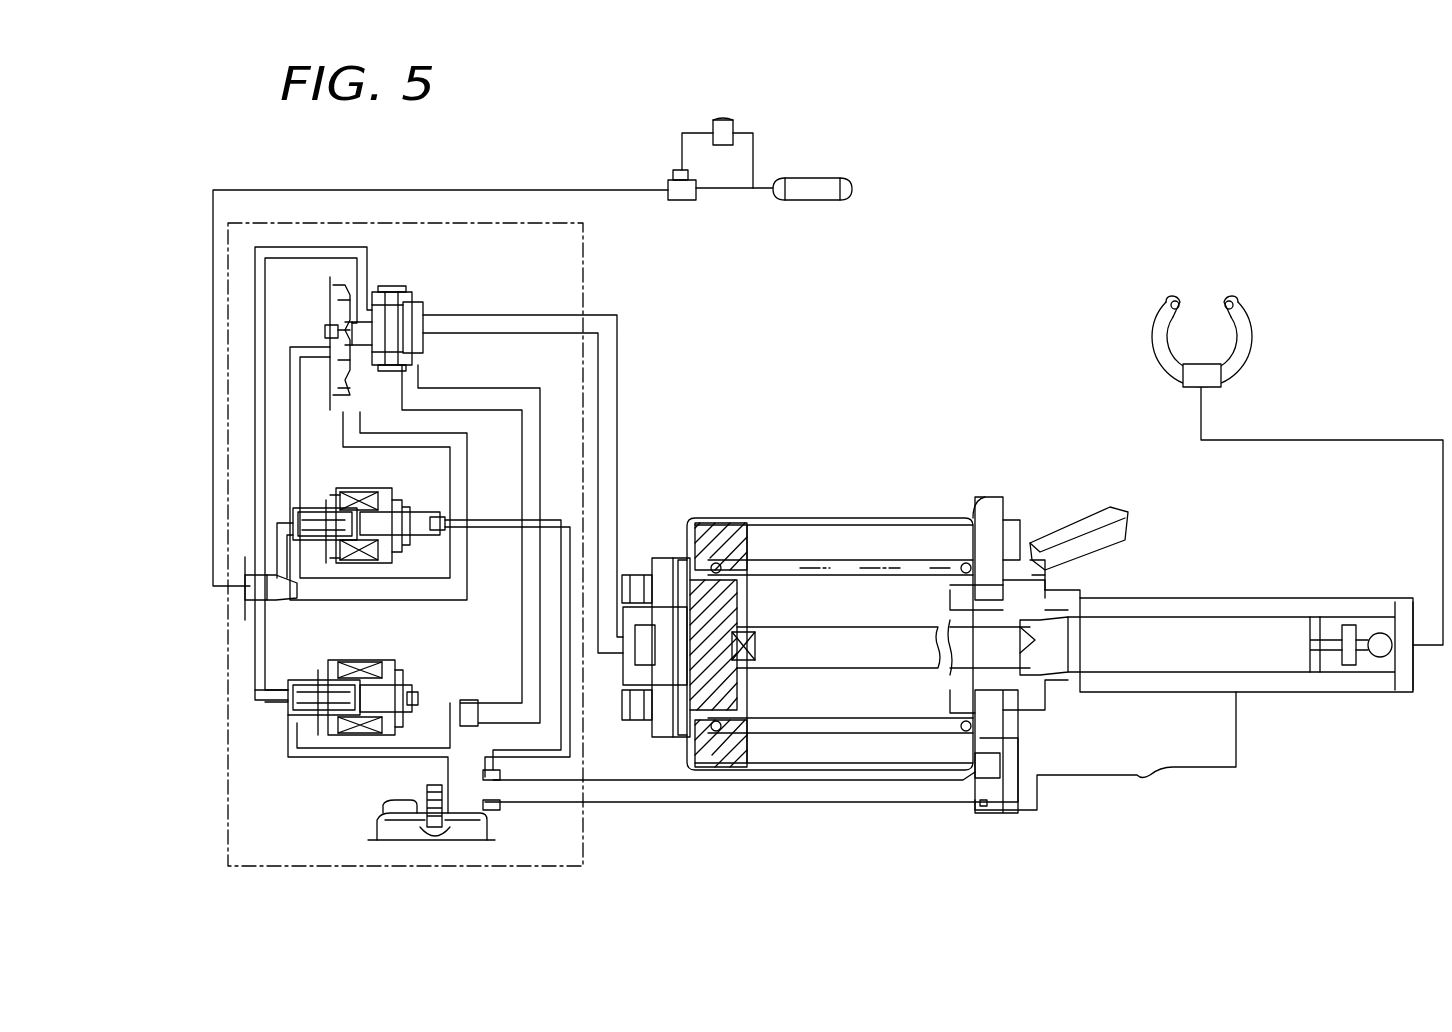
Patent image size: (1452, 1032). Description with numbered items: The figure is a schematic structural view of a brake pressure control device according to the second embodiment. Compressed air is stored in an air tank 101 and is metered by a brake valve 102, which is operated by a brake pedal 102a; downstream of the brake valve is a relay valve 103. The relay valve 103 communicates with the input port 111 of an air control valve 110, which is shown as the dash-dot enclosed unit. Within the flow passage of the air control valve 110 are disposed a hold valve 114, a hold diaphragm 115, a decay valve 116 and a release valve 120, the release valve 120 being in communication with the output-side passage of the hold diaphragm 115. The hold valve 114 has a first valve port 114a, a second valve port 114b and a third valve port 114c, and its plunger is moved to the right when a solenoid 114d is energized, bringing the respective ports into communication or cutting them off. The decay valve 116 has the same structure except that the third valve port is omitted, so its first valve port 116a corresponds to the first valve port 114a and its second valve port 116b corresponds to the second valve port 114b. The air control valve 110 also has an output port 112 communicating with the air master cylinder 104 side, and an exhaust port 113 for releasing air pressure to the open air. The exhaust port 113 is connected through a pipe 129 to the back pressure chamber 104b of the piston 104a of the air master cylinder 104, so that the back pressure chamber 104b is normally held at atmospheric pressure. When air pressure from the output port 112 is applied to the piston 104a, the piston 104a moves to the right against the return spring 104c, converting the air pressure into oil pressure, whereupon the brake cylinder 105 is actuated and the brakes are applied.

The air tank 101 is at (820, 182).
The brake valve 102 is at (733, 125).
The brake pedal 102a is at (724, 120).
The relay valve 103 is at (668, 185).
The air master cylinder 104 is at (1032, 622).
The piston 104a is at (730, 592).
The back pressure chamber 104b is at (903, 713).
The return spring 104c is at (872, 565).
The brake cylinder 105 is at (1225, 375).
The air control valve 110 is at (585, 240).
The input port 111 is at (250, 595).
The output port 112 is at (612, 470).
The exhaust port 113 is at (463, 775).
The hold valve 114 is at (380, 502).
The first valve port 114a is at (277, 545).
The second valve port 114b is at (297, 462).
The third valve port 114c is at (493, 522).
The solenoid 114d is at (360, 560).
The hold diaphragm 115 is at (330, 315).
The decay valve 116 is at (413, 668).
The first valve port 116a is at (288, 728).
The second valve port 116b is at (255, 662).
The release valve 120 is at (413, 290).
The pipe 129 is at (763, 793).